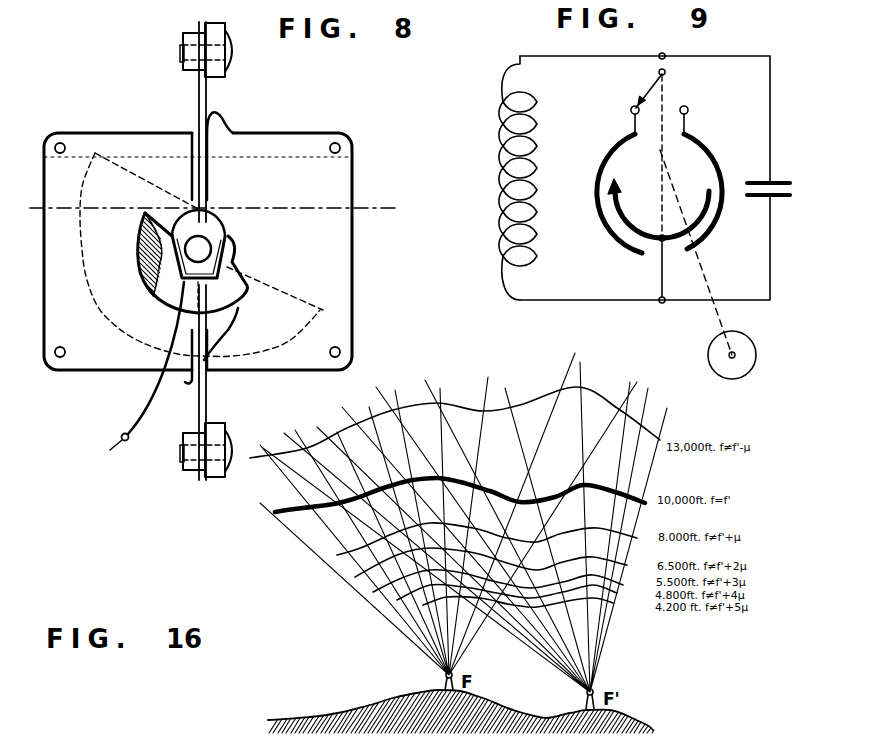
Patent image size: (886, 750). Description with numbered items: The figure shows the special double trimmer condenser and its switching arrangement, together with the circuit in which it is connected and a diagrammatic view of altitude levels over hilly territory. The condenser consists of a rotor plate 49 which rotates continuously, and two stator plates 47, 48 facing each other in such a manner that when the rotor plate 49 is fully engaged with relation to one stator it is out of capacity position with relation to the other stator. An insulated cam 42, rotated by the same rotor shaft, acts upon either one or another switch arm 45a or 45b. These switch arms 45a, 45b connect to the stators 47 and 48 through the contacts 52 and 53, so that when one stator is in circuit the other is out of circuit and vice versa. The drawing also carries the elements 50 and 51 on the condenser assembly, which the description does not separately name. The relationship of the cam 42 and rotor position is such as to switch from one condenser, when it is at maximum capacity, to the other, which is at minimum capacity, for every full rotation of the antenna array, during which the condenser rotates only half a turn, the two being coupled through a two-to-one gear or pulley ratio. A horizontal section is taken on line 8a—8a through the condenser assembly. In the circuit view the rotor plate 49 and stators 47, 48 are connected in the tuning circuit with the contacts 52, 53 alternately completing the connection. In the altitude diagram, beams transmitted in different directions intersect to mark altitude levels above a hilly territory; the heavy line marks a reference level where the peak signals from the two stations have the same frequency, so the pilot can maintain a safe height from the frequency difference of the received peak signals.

In FIG. 8, the section line 8a— 8a is at (27, 205).
In FIG. 8, the insulated cam 42 is at (136, 252).
In FIG. 9, the insulated cam 42 is at (596, 189).
In FIG. 8, the switch arm 45a is at (206, 100).
In FIG. 8, the switch arm 45b is at (206, 404).
In FIG. 8, the stator plate 47 is at (142, 140).
In FIG. 8, the stator plate 48 is at (273, 142).
In FIG. 9, the stator plate 48 is at (708, 147).
In FIG. 8, the rotor plate 49 is at (287, 288).
In FIG. 9, the rotor plate 49 is at (630, 230).
In FIG. 8, the pawl hub with pivot 50 is at (220, 263).
In FIG. 8, the ring end of spring wire 51 is at (111, 457).
In FIG. 8, the contact 52 is at (217, 117).
In FIG. 9, the contact 52 is at (692, 108).
In FIG. 8, the contact 53 is at (183, 377).
In FIG. 9, the contact 53 is at (627, 108).